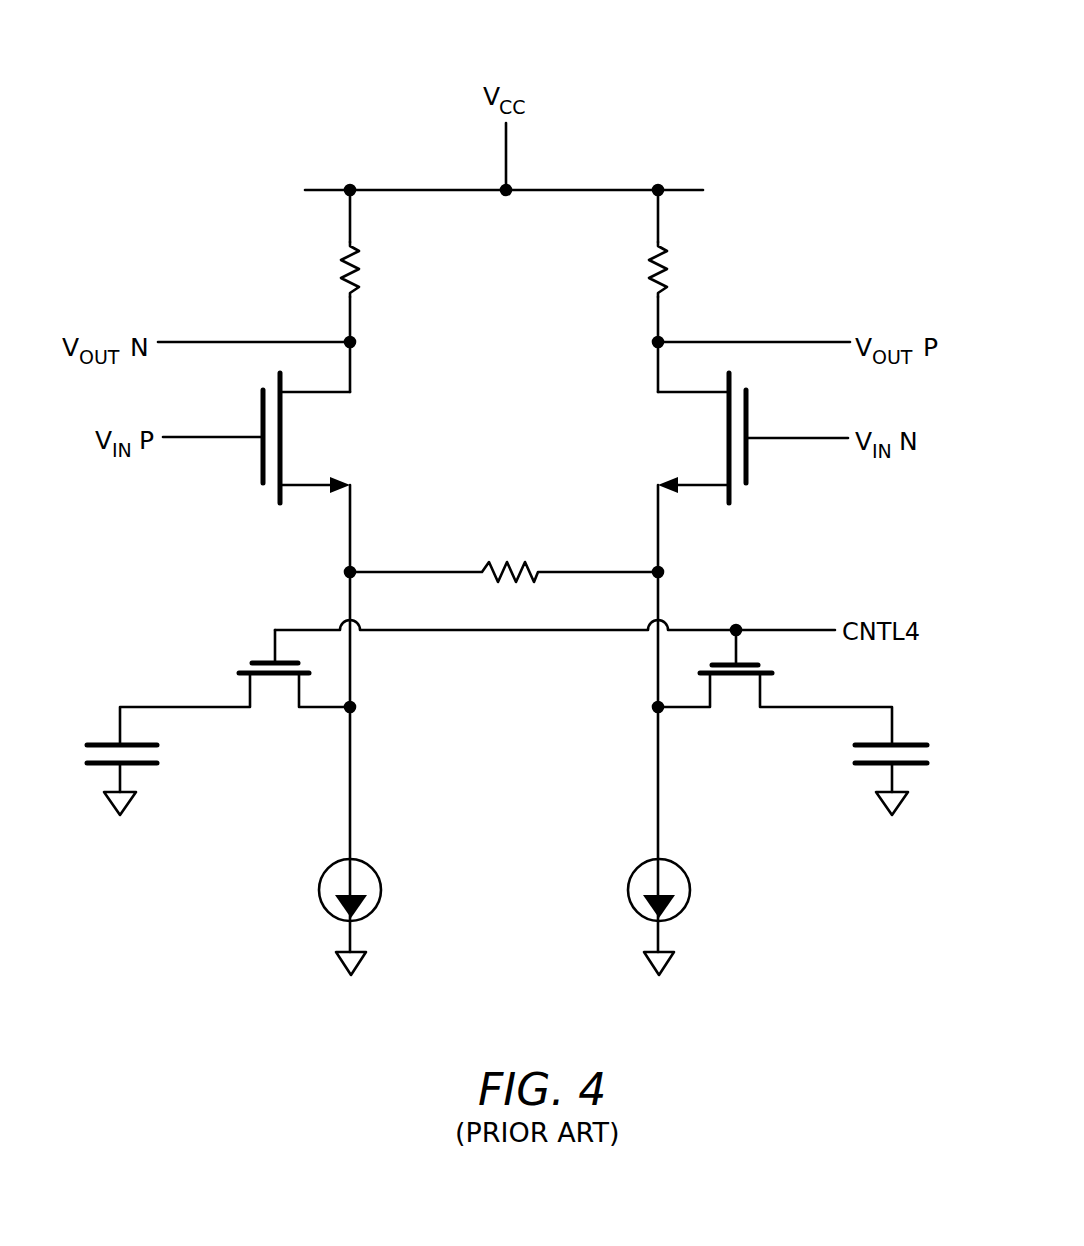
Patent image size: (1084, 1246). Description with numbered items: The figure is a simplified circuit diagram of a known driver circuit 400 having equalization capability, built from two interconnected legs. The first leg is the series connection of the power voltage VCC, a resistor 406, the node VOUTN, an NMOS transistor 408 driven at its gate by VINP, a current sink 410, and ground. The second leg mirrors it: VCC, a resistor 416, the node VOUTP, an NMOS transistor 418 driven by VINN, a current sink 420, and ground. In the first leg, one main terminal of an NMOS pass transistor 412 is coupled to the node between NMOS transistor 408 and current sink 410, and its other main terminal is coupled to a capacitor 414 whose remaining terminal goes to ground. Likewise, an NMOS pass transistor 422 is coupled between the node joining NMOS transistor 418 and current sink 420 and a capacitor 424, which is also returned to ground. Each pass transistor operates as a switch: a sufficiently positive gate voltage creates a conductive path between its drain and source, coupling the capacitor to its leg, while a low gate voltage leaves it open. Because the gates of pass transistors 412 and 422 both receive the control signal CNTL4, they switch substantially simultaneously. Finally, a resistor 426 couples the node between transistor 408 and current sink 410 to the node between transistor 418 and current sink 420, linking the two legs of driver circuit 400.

The driver circuit 400 is at (788, 93).
The resistor 406 is at (360, 264).
The NMOS transistor 408 is at (320, 395).
The current sink 410 is at (380, 879).
The NMOS pass transistor 412 is at (297, 690).
The capacitor 414 is at (150, 770).
The resistor 416 is at (650, 273).
The NMOS transistor 418 is at (670, 395).
The current sink 420 is at (629, 891).
The NMOS pass transistor 422 is at (712, 692).
The capacitor 424 is at (870, 769).
The resistor 426 is at (512, 566).